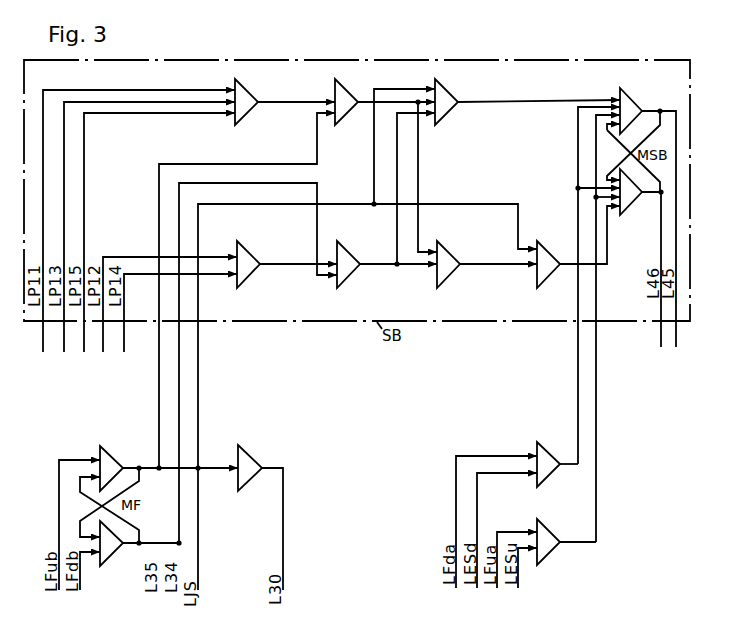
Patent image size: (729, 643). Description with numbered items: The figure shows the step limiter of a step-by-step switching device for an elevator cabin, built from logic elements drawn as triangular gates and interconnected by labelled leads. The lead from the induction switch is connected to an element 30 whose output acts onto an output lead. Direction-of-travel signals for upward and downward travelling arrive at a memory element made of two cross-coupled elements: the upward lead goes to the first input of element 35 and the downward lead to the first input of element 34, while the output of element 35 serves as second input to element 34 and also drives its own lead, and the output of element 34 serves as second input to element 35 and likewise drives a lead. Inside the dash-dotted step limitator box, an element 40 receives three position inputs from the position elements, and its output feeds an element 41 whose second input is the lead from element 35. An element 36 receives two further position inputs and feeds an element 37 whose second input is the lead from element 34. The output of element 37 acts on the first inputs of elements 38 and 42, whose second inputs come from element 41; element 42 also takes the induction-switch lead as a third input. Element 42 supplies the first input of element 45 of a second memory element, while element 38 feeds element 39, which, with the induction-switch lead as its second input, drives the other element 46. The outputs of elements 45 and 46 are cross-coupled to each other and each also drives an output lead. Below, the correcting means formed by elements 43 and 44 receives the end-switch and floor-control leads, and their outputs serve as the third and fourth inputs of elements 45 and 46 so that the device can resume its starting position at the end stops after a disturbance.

The element 30 is at (250, 448).
The element 34 is at (110, 556).
The element 35 is at (109, 455).
The element 36 is at (246, 250).
The element 37 is at (346, 250).
The element 38 is at (446, 250).
The element 39 is at (546, 250).
The element 40 is at (246, 90).
The element 41 is at (346, 90).
The element 42 is at (445, 90).
The element 43 is at (547, 452).
The element 44 is at (547, 529).
The element 45 is at (628, 97).
The element 46 is at (636, 205).